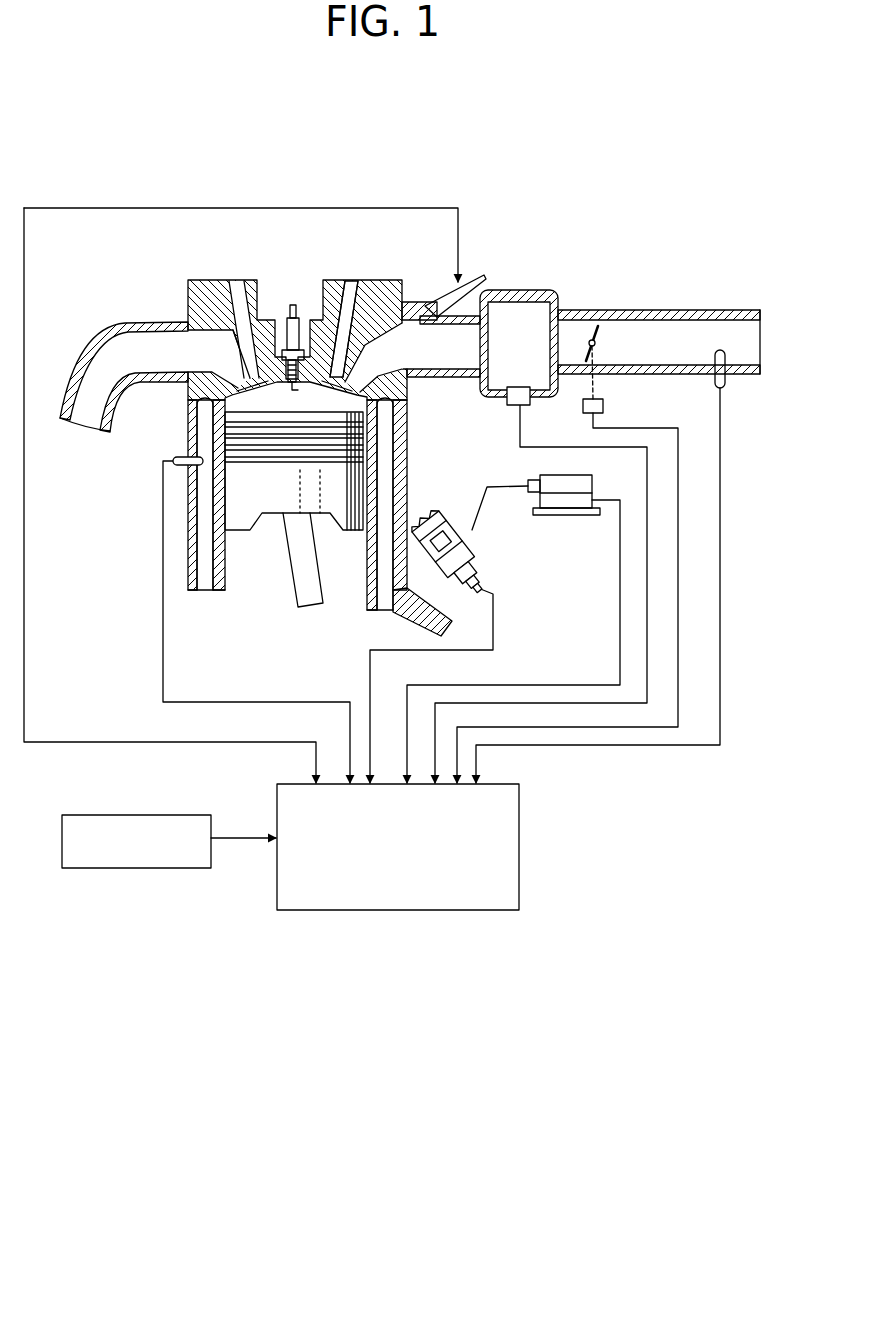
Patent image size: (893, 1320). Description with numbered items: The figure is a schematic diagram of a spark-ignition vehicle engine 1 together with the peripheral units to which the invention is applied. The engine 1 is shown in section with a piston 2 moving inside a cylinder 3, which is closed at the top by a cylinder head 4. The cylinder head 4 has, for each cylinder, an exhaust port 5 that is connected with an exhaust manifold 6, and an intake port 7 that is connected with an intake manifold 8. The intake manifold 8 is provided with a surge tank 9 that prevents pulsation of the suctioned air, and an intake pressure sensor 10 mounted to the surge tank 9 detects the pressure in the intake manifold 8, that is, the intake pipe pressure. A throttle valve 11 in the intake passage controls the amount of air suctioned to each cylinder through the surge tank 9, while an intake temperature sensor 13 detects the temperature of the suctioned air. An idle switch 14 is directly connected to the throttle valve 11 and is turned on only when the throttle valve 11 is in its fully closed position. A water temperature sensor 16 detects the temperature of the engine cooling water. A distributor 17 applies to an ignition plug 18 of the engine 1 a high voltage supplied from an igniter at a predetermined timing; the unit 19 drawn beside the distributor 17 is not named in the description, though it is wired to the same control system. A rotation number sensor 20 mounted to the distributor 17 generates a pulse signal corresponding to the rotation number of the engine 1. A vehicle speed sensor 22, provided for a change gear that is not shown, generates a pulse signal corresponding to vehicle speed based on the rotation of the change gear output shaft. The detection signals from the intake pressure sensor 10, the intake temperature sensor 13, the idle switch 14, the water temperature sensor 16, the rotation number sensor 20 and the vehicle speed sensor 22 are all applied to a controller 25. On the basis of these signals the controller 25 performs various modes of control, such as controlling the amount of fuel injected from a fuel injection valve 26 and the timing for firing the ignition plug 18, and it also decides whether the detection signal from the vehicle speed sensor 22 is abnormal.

The sparking type vehicle engine 1 is at (284, 281).
The piston 2 is at (352, 513).
The cylinder 3 is at (407, 465).
The cylinder head 4 is at (219, 292).
The exhaust port 5 is at (197, 358).
The exhaust manifold 6 is at (93, 342).
The intake port 7 is at (397, 348).
The intake manifold 8 is at (436, 380).
The surge tank 9 is at (486, 391).
The intake pressure sensor 10 is at (510, 405).
The throttle valve 11 is at (594, 328).
The intake temperature sensor 13 is at (726, 378).
The idle switch 14 is at (602, 402).
The water temperature sensor 16 is at (184, 452).
The distributor 17 is at (456, 528).
The ignition plug 18 is at (299, 325).
The pressure sensor 19 is at (573, 516).
The rotation number sensor 20 is at (478, 592).
The vehicle speed sensor 22 is at (95, 815).
The controller 25 is at (520, 850).
The fuel injection valve 26 is at (442, 294).